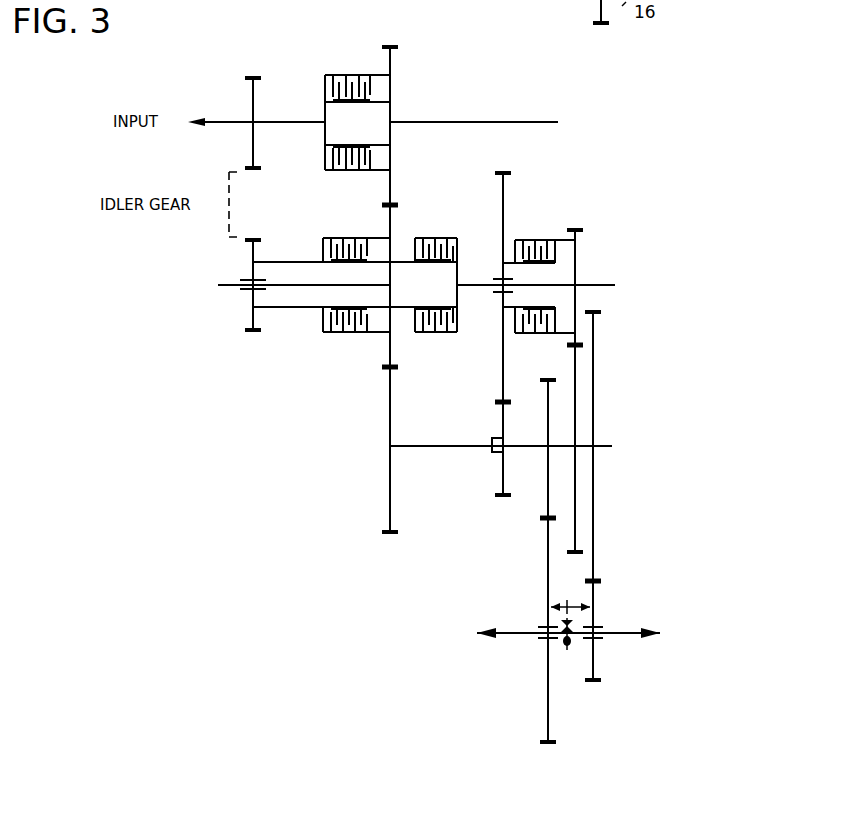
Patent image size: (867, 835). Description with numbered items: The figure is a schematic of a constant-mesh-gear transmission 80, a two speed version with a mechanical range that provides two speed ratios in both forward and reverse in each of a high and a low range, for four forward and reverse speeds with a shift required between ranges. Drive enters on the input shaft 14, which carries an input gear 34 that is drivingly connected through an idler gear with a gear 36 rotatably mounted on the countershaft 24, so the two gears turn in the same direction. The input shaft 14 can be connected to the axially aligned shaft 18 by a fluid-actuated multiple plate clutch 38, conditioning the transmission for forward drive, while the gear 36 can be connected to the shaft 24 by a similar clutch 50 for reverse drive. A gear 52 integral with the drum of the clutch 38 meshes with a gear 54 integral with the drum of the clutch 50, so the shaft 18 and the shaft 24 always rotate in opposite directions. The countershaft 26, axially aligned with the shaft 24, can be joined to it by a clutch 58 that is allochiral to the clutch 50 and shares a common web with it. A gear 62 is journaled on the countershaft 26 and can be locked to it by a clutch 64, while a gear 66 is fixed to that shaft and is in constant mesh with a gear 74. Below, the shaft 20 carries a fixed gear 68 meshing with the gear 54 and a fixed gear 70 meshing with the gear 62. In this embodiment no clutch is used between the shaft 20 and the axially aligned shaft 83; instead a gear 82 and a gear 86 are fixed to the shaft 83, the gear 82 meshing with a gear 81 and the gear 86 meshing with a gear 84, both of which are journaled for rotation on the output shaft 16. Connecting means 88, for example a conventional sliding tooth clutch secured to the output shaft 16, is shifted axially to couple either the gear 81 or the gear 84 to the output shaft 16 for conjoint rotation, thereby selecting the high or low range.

The input shaft 14 is at (273, 124).
The output shaft 16 is at (646, 640).
The shaft 18 is at (501, 122).
The shaft 20 is at (430, 448).
The countershaft 24 is at (294, 290).
The countershaft 26 is at (484, 292).
The input gear 34 is at (252, 88).
The gear 36 is at (252, 248).
The clutch 38 is at (338, 72).
The clutch 50 is at (340, 234).
The gear 52 is at (398, 72).
The gear 54 is at (393, 212).
The clutch 58 is at (427, 238).
The gear 62 is at (512, 190).
The clutch 64 is at (524, 238).
The gear 66 is at (578, 238).
The gear 68 is at (389, 390).
The gear 70 is at (502, 412).
The gear 74 is at (578, 392).
The transmission 80 is at (300, 478).
The gear 81 is at (547, 552).
The gear 82 is at (547, 400).
The shaft 83 is at (521, 448).
The gear 84 is at (593, 663).
The gear 86 is at (600, 337).
The connecting means 88 is at (567, 650).